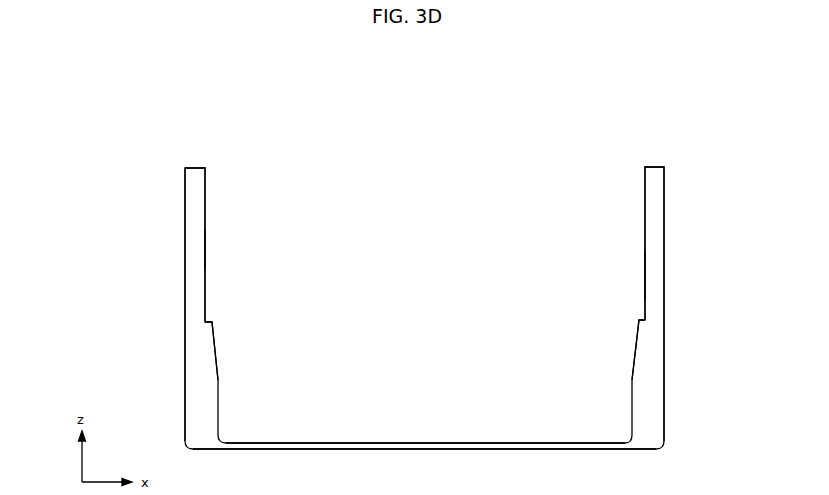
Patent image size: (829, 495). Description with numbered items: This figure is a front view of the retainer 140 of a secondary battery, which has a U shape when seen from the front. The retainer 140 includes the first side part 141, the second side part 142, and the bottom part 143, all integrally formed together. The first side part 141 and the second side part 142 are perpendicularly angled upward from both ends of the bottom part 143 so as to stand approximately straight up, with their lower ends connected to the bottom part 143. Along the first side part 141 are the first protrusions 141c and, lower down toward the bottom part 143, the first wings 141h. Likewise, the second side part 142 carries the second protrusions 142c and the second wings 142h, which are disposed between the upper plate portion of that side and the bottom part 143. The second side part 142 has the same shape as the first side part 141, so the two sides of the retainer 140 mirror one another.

The retainer 140 is at (696, 130).
The first side part 141 is at (183, 208).
The first protrusions 141c is at (200, 248).
The first wings 141h is at (209, 360).
The second side part 142 is at (669, 207).
The second protrusions 142c is at (658, 272).
The second wings 142h is at (638, 345).
The bottom part 143 is at (397, 442).